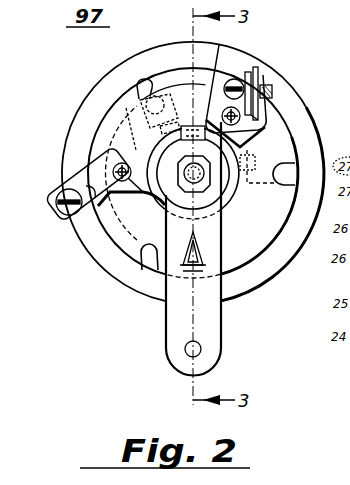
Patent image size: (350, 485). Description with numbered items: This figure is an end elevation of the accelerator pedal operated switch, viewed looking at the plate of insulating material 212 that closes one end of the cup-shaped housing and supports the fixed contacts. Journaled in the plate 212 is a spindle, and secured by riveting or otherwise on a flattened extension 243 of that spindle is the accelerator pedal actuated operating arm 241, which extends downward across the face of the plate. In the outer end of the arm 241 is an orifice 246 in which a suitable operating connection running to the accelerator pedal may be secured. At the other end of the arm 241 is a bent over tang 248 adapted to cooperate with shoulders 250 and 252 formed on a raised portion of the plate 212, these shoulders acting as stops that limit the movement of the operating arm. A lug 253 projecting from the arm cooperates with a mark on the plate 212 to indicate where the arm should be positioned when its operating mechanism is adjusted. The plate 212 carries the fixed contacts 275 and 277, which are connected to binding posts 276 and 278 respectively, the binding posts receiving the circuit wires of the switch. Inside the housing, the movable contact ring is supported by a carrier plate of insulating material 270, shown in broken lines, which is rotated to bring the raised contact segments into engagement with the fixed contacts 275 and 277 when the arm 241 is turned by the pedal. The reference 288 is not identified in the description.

The plate of insulating material 212 is at (256, 252).
The operating arm 241 is at (182, 320).
The flattened extension 243 is at (210, 170).
The orifice 246 is at (188, 356).
The bent over tang 248 is at (190, 134).
The shoulder 250 is at (226, 58).
The shoulder 252 is at (155, 177).
The lug 253 is at (228, 270).
The carrier plate of insulating material 270 is at (155, 84).
The fixed contact 275 is at (270, 108).
The binding post 276 is at (256, 63).
The fixed contact 277 is at (95, 157).
The binding post 278 is at (67, 210).
The housing 288 is at (205, 171).